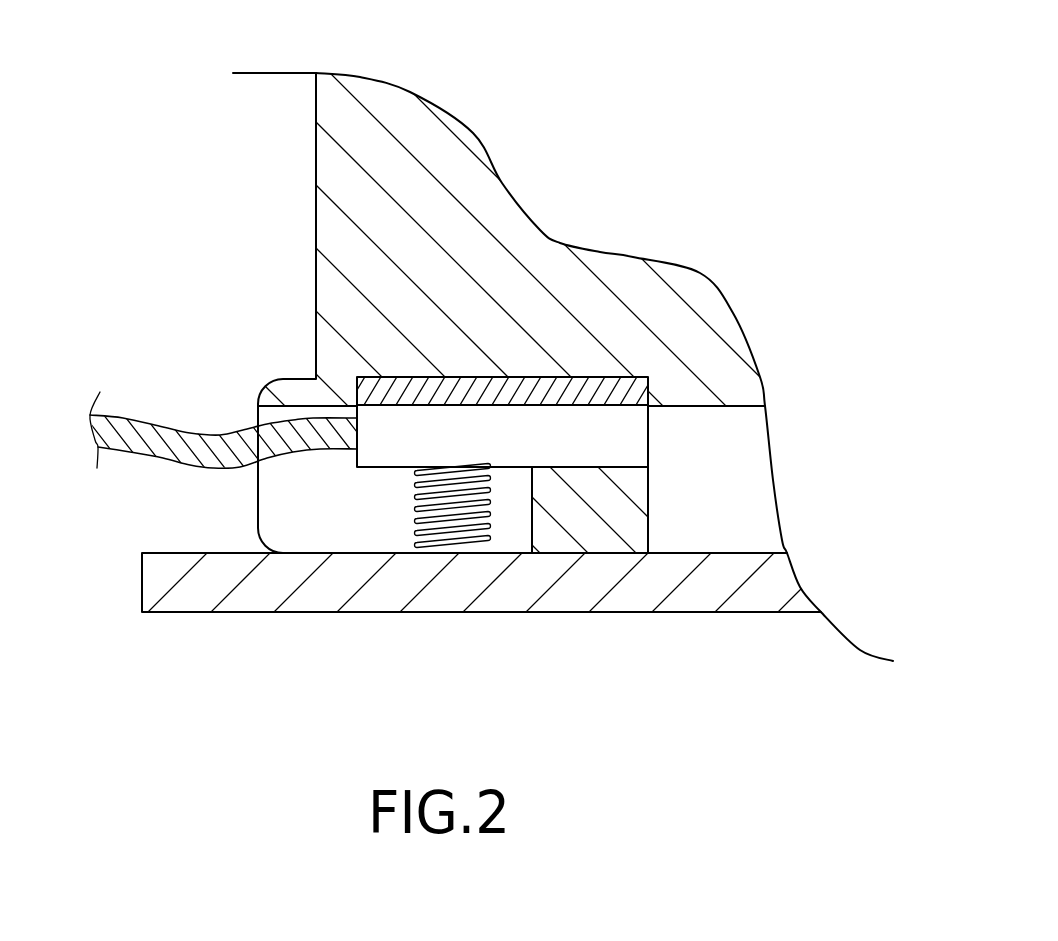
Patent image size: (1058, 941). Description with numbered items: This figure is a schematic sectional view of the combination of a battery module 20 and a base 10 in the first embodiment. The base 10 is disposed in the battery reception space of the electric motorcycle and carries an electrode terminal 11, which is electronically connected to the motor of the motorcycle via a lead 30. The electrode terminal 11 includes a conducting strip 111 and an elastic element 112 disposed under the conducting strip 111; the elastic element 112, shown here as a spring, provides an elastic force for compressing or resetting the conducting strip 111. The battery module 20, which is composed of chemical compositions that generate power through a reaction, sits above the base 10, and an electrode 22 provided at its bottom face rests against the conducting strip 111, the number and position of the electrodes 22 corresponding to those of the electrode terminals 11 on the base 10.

The base 10 is at (195, 585).
The electrode terminal 11 is at (372, 497).
The conducting strip 111 is at (613, 440).
The elastic element 112 is at (417, 522).
The battery module 20 is at (357, 255).
The electrode 22 is at (542, 388).
The lead 30 is at (213, 442).